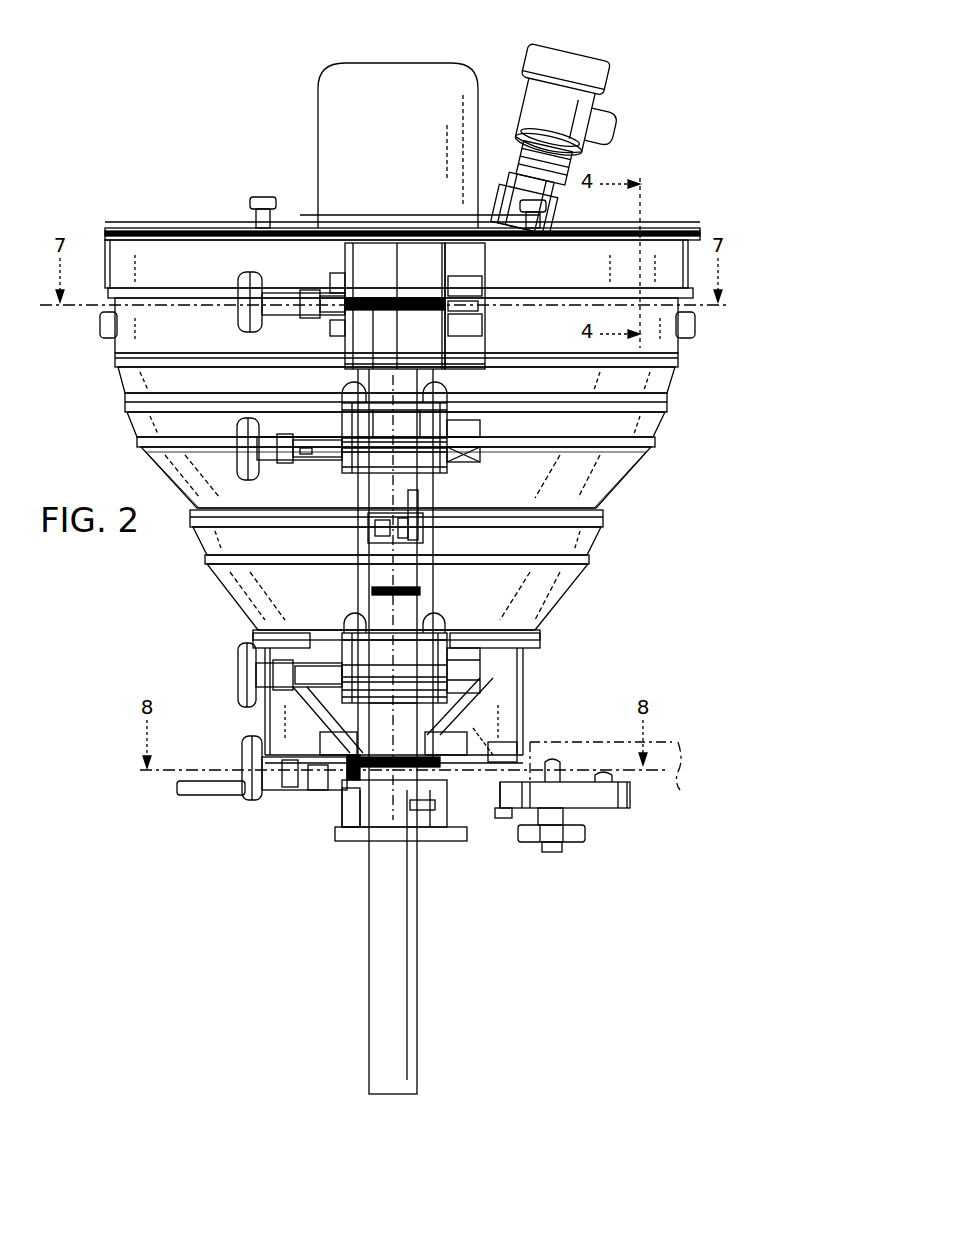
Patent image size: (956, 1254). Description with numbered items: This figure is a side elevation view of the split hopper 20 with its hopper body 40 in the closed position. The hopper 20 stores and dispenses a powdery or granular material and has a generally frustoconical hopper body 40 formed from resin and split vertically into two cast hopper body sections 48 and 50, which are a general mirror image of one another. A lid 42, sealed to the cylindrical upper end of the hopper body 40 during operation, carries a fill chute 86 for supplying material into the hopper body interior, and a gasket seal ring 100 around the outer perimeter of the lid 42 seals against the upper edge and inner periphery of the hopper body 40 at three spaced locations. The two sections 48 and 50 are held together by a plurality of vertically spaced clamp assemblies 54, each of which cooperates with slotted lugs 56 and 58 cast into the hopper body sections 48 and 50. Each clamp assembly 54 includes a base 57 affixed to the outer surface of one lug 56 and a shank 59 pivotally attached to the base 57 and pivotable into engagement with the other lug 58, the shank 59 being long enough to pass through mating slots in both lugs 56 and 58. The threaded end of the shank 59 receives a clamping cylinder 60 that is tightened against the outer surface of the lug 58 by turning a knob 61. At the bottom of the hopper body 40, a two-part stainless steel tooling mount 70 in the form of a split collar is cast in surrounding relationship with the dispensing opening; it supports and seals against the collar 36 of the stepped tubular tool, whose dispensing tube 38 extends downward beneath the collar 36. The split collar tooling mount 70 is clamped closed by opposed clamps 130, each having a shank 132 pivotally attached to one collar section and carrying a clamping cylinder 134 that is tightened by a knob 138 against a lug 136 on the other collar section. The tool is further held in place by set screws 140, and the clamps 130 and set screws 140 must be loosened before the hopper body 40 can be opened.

The split hopper 20 is at (620, 66).
The collar 36 is at (392, 812).
The dispensing tube 38 is at (395, 1000).
The hopper body 40 is at (618, 477).
The lid 42 is at (150, 211).
The hopper body section 48 is at (543, 586).
The hopper body section 50 is at (245, 589).
The clamp assembly 54 is at (238, 318).
The slotted lug 56 is at (460, 345).
The base 57 is at (465, 285).
The slotted lug 58 is at (345, 350).
The shank 59 is at (410, 293).
The clamping cylinder 60 is at (267, 228).
The knob 61 is at (250, 292).
The tooling mount 70 is at (422, 800).
The fill chute 86 is at (553, 95).
The gasket seal ring 100 is at (690, 232).
The clamp 130 is at (233, 760).
The shank 132 is at (375, 800).
The clamping cylinder 134 is at (310, 785).
The lug 136 is at (345, 758).
The knob 138 is at (240, 794).
The set screw 140 is at (480, 765).